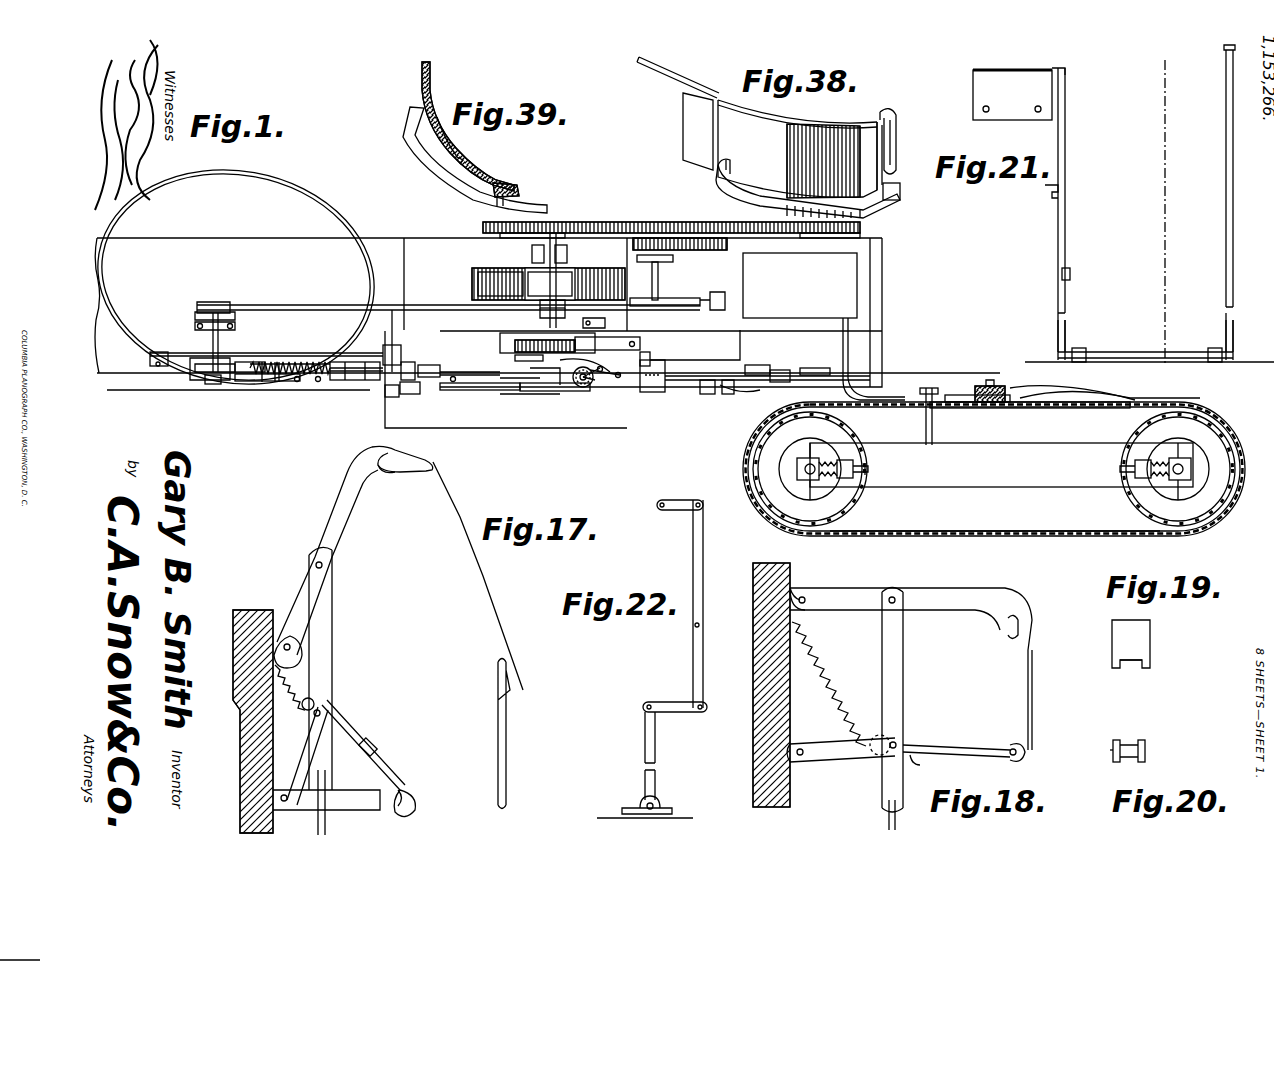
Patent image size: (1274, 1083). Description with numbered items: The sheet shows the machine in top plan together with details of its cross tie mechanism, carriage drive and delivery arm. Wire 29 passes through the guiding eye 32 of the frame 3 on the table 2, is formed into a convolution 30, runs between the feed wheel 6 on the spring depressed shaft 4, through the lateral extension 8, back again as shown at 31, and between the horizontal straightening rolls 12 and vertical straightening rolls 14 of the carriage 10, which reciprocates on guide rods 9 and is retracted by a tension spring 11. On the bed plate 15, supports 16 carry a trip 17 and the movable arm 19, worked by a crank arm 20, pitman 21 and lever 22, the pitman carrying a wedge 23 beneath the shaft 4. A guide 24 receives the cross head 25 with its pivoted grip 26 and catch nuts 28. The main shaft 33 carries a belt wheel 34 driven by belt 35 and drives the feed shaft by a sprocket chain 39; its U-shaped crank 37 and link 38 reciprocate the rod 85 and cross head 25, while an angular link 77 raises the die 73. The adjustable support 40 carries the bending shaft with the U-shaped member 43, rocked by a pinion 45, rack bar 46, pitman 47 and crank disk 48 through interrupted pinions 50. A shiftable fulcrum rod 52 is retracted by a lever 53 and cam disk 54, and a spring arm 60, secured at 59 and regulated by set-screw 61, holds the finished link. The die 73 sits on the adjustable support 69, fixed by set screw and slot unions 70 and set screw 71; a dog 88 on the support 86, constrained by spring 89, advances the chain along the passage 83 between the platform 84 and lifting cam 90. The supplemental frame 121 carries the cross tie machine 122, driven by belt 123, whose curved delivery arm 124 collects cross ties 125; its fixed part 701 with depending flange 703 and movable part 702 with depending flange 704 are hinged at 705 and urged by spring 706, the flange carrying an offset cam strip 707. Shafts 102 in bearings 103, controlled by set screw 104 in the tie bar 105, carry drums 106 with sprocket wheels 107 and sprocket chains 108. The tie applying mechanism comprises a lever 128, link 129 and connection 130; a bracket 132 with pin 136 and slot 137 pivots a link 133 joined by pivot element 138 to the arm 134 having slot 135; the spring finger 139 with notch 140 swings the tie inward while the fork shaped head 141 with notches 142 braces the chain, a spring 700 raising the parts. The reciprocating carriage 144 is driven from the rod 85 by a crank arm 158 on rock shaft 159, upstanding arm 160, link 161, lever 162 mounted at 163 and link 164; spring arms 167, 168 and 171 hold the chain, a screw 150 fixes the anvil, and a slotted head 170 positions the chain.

In FIG. 1, the table 2 is at (255, 245).
In FIG. 1, the frame 3 is at (240, 362).
In FIG. 1, the spring depressed shaft 4 is at (200, 330).
In FIG. 1, the feed wheel 6 is at (210, 384).
In FIG. 1, the lateral extension 8 is at (262, 384).
In FIG. 1, the guide rods 9 is at (277, 384).
In FIG. 1, the carriage 10 is at (311, 383).
In FIG. 1, the tension spring 11 is at (283, 362).
In FIG. 1, the horizontal straightening rolls 12 is at (297, 383).
In FIG. 1, the vertical straightening rolls 14 is at (360, 368).
In FIG. 1, the bed plate 15 is at (405, 330).
In FIG. 1, the supports 16 is at (395, 345).
In FIG. 1, the trip 17 is at (416, 361).
In FIG. 1, the movable member or arm 19 is at (400, 392).
In FIG. 1, the crank arm 20 is at (392, 330).
In FIG. 1, the pitman 21 is at (305, 364).
In FIG. 1, the lever 22 is at (155, 355).
In FIG. 21, the lever 22 is at (1161, 207).
In FIG. 1, the wedge 23 is at (205, 352).
In FIG. 1, the guide 24 is at (427, 395).
In FIG. 1, the cross head 25 is at (505, 397).
In FIG. 1, the pivoted grip 26 is at (438, 362).
In FIG. 1, the superposed nuts 28 is at (455, 392).
In FIG. 1, the wire 29 is at (124, 380).
In FIG. 1, the convolution 30 is at (355, 212).
In FIG. 1, the re-extended wire portion 31 is at (245, 381).
In FIG. 1, the guiding eye 32 is at (190, 378).
In FIG. 1, the shaft 33 is at (556, 240).
In FIG. 1, the belt wheel 34 is at (480, 268).
In FIG. 1, the belt 35 is at (472, 280).
In FIG. 1, the U-shaped crank 37 is at (575, 388).
In FIG. 1, the link 38 is at (500, 384).
In FIG. 1, the belt or sprocket chain 39 is at (333, 307).
In FIG. 1, the support 40 is at (587, 388).
In FIG. 1, the U-shaped member 43 is at (590, 383).
In FIG. 1, the pinion 45 is at (578, 388).
In FIG. 1, the rack bar 46 is at (640, 344).
In FIG. 1, the pitman 47 is at (475, 372).
In FIG. 1, the crank disk 48 is at (515, 345).
In FIG. 1, the interrupted pinions 50 is at (592, 328).
In FIG. 1, the shiftable fulcrum rod 52 is at (620, 330).
In FIG. 1, the lever 53 is at (570, 318).
In FIG. 1, the cam disk 54 is at (560, 328).
In FIG. 1, the arm securing point 59 is at (595, 374).
In FIG. 1, the spring arm 60 is at (604, 372).
In FIG. 1, the set-screw 61 is at (622, 378).
In FIG. 1, the support 69 is at (725, 365).
In FIG. 1, the set screw and slot unions 70 is at (740, 365).
In FIG. 1, the set screw 71 is at (685, 370).
In FIG. 1, the die 73 is at (660, 388).
In FIG. 1, the angular link 77 is at (538, 392).
In FIG. 1, the recess or passage 83 is at (767, 376).
In FIG. 1, the platform 84 is at (708, 395).
In FIG. 1, the rod 85 is at (528, 392).
In FIG. 21, the rod 85 is at (1229, 340).
In FIG. 1, the support 86 is at (728, 395).
In FIG. 1, the dog 88 is at (783, 370).
In FIG. 1, the spring 89 is at (755, 390).
In FIG. 1, the lifting cam 90 is at (812, 368).
In FIG. 1, the shafts 102 is at (810, 464).
In FIG. 1, the bearings 103 is at (810, 482).
In FIG. 1, the set screw 104 is at (870, 470).
In FIG. 1, the tie bar 105 is at (1000, 480).
In FIG. 1, the drums 106 is at (1210, 402).
In FIG. 1, the sprocket wheels 107 is at (790, 510).
In FIG. 1, the sprocket chains 108 is at (930, 530).
In FIG. 1, the supplemental frame 121 is at (883, 262).
In FIG. 1, the cross tie machine 122 is at (845, 290).
In FIG. 1, the belt 123 is at (635, 220).
In FIG. 1, the curved delivery arm 124 is at (857, 375).
In FIG. 38, the curved delivery arm 124 is at (636, 61).
In FIG. 38, the cross tie 125 is at (900, 140).
In FIG. 17, the cross tie 125 is at (508, 730).
In FIG. 18, the cross tie 125 is at (1034, 690).
In FIG. 17, the lever 128 is at (325, 520).
In FIG. 18, the lever 128 is at (928, 586).
In FIG. 17, the link 129 is at (322, 622).
In FIG. 18, the link 129 is at (905, 652).
In FIG. 17, the connection 130 is at (326, 822).
In FIG. 18, the connection 130 is at (888, 820).
In FIG. 17, the bracket 132 is at (342, 770).
In FIG. 18, the bracket 132 is at (860, 760).
In FIG. 17, the link 133 is at (290, 735).
In FIG. 18, the link 133 is at (832, 745).
In FIG. 17, the arm 134 is at (316, 706).
In FIG. 18, the arm 134 is at (920, 745).
In FIG. 17, the slot 135 is at (375, 750).
In FIG. 18, the slot 135 is at (975, 750).
In FIG. 17, the pin 136 is at (398, 770).
In FIG. 18, the pin 136 is at (930, 768).
In FIG. 17, the slot 137 is at (400, 805).
In FIG. 17, the pivot element 138 is at (320, 712).
In FIG. 18, the pivot element 138 is at (896, 740).
In FIG. 17, the spring finger 139 is at (425, 468).
In FIG. 18, the spring finger 139 is at (1032, 632).
In FIG. 19, the spring finger 139 is at (1140, 630).
In FIG. 19, the notch 140 is at (1150, 654).
In FIG. 17, the fork shaped head 141 is at (408, 790).
In FIG. 18, the fork shaped head 141 is at (1020, 745).
In FIG. 20, the fork shaped head 141 is at (1110, 752).
In FIG. 20, the notches 142 is at (1130, 742).
In FIG. 21, the reciprocating carriage 144 is at (980, 70).
In FIG. 1, the screw 150 is at (968, 383).
In FIG. 21, the crank arm 158 is at (1226, 70).
In FIG. 1, the rock shaft 159 is at (935, 428).
In FIG. 21, the rock shaft 159 is at (1115, 352).
In FIG. 22, the rock shaft 159 is at (645, 806).
In FIG. 21, the upstanding arm 160 is at (1066, 300).
In FIG. 22, the upstanding arm 160 is at (657, 740).
In FIG. 21, the link 161 is at (1070, 272).
In FIG. 22, the link 161 is at (672, 702).
In FIG. 21, the lever 162 is at (1066, 226).
In FIG. 22, the lever 162 is at (703, 655).
In FIG. 21, the pivot mounting 163 is at (1066, 192).
In FIG. 22, the pivot mounting 163 is at (694, 626).
In FIG. 21, the link 164 is at (1066, 70).
In FIG. 22, the link 164 is at (679, 498).
In FIG. 1, the spring arm 167 is at (960, 400).
In FIG. 1, the spring arm 168 is at (1055, 408).
In FIG. 1, the head 170 is at (1127, 383).
In FIG. 1, the spring arm 171 is at (1080, 383).
In FIG. 17, the spring 700 is at (300, 682).
In FIG. 18, the spring 700 is at (830, 670).
In FIG. 1, the fixed part 701 is at (845, 345).
In FIG. 38, the fixed part 701 is at (690, 88).
In FIG. 38, the laterally movable part 702 is at (800, 124).
In FIG. 39, the depending flange 703 is at (421, 78).
In FIG. 38, the depending flange 703 is at (693, 133).
In FIG. 39, the depending flange 704 is at (490, 192).
In FIG. 38, the depending flange 704 is at (893, 112).
In FIG. 38, the hinge connection 705 is at (718, 100).
In FIG. 39, the spring 706 is at (437, 115).
In FIG. 39, the offset cam strip 707 is at (412, 148).
In FIG. 38, the offset cam strip 707 is at (900, 200).